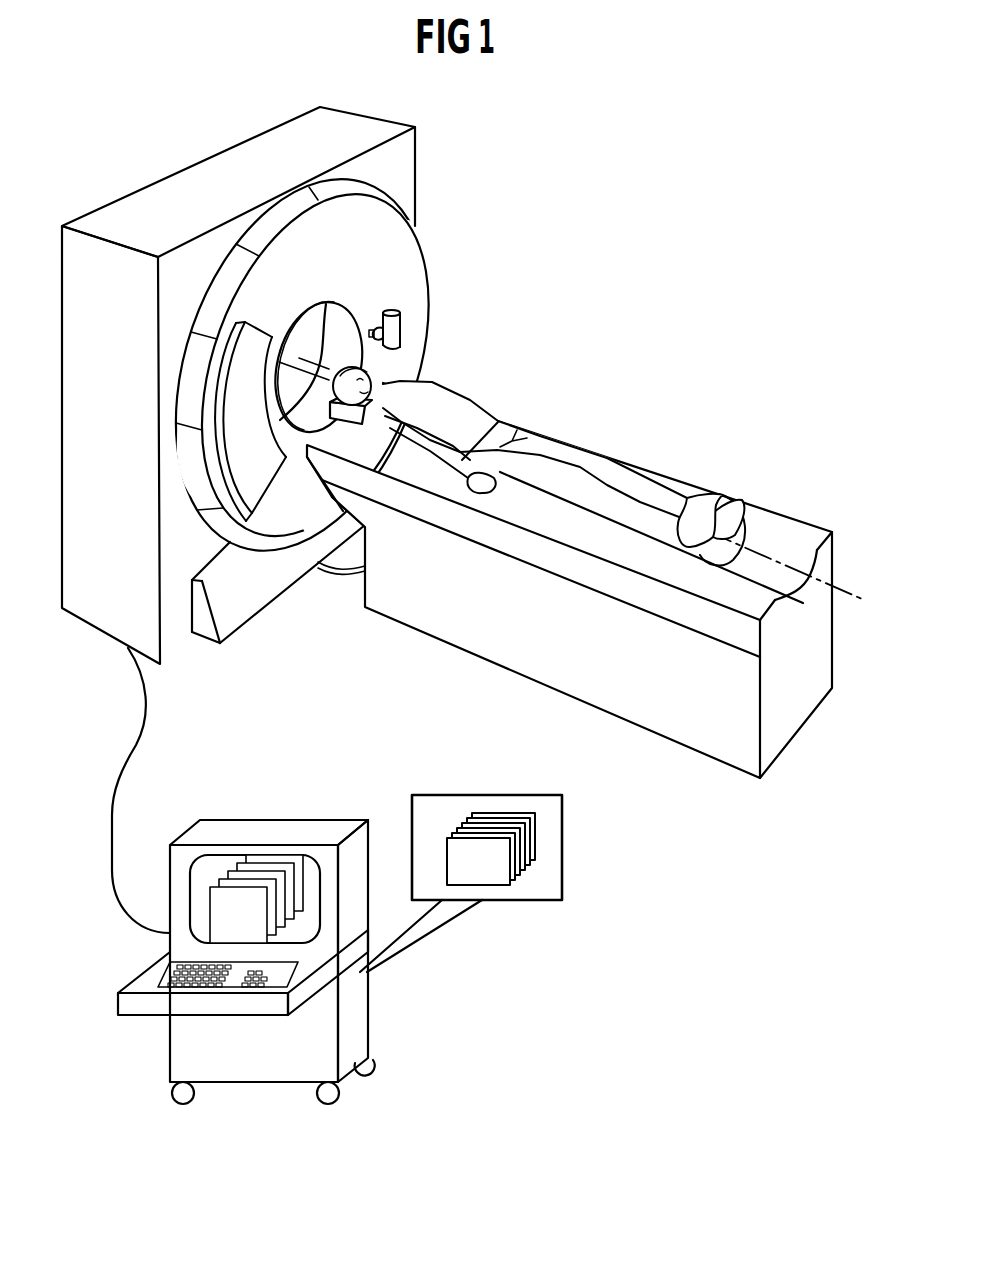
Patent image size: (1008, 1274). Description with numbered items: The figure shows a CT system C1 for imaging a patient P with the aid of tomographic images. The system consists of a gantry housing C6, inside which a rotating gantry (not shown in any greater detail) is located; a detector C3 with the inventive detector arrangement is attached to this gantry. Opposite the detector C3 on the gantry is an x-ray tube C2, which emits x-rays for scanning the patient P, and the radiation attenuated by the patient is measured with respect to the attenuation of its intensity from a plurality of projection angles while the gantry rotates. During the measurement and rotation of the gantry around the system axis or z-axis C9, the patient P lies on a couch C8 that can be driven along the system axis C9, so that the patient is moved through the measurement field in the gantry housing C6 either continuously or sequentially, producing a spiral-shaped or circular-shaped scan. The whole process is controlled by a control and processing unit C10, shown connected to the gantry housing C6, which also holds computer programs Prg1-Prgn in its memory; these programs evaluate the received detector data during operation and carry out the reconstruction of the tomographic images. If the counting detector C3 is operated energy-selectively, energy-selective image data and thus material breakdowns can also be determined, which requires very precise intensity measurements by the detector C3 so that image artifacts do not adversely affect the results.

The CT system C1 is at (612, 300).
The x-ray tube C2 is at (395, 323).
The detector C3 is at (248, 478).
The gantry housing C6 is at (88, 595).
The couch C8 is at (715, 732).
The system axis C9 is at (862, 602).
The control and processing unit C10 is at (360, 1017).
The patient P is at (457, 412).
The computer programs Prg1-Prgn is at (493, 885).